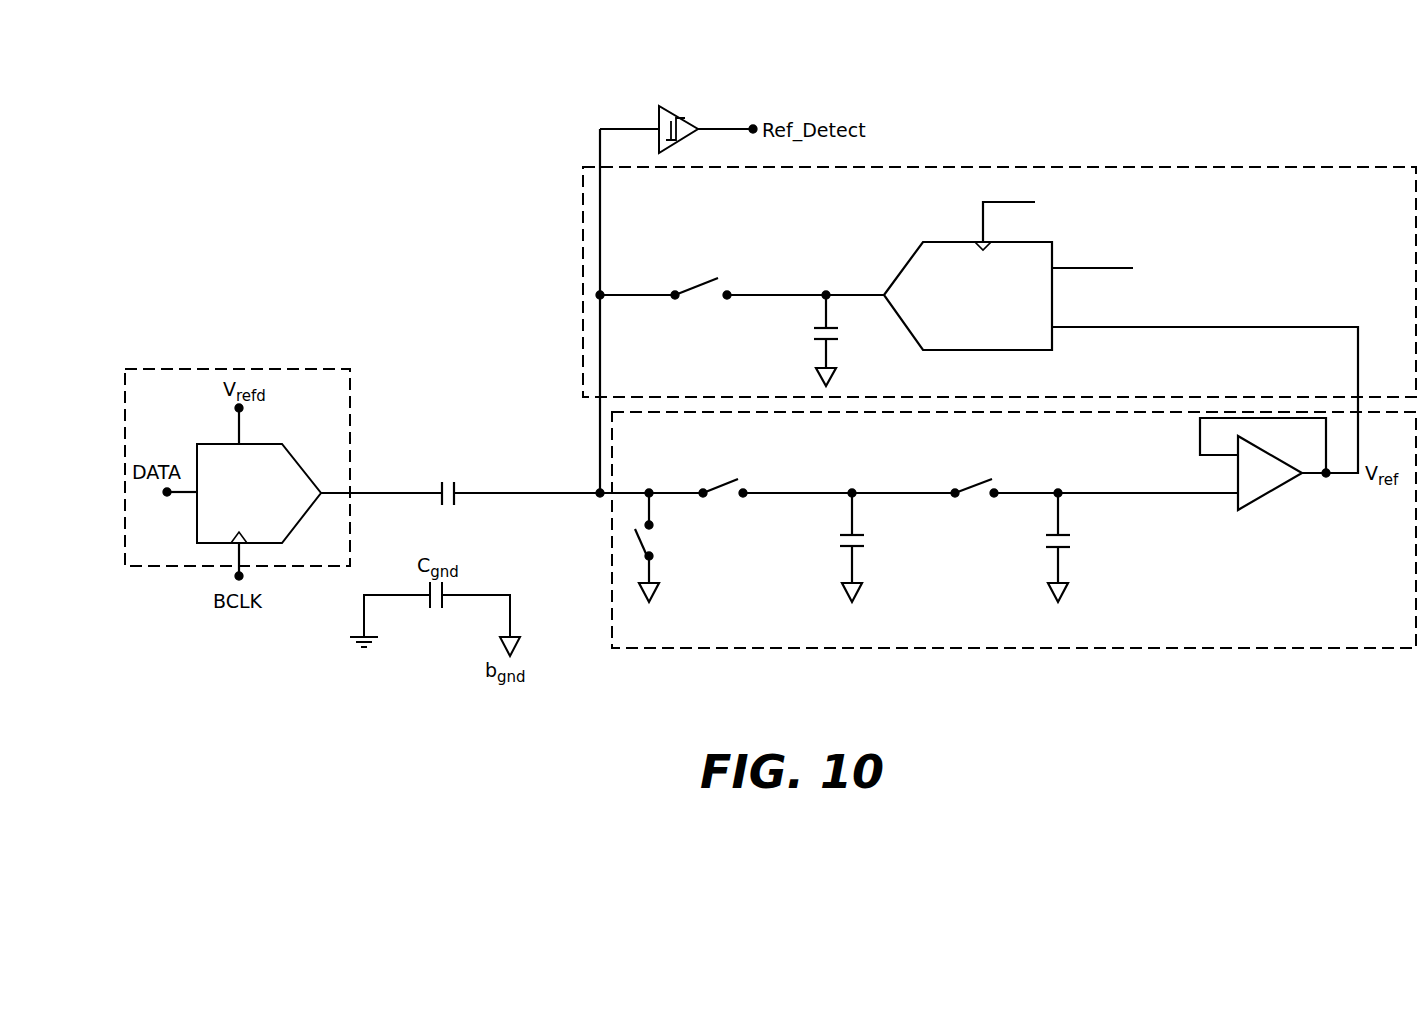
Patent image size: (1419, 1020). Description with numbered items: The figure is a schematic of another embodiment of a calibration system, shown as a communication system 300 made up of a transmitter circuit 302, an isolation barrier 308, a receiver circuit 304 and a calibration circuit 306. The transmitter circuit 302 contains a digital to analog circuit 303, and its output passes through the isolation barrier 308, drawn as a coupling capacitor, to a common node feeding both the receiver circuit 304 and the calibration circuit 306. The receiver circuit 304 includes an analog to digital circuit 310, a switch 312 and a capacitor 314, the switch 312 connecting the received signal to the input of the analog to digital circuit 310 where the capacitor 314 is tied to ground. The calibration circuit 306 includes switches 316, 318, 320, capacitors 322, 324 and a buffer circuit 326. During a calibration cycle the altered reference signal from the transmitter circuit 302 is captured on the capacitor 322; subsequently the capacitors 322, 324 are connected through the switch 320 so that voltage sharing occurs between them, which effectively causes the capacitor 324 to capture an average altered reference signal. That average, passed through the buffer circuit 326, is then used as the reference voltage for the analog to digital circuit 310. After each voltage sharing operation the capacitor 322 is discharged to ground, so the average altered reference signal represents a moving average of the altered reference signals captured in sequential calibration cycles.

The communication system 300 is at (424, 123).
The transmitter circuit 302 is at (193, 369).
The digital to analog circuit 303 is at (197, 517).
The receiver circuit 304 is at (1112, 167).
The calibration circuit 306 is at (1183, 648).
The isolation barrier 308 is at (440, 481).
The analog to digital circuit 310 is at (902, 268).
The switch 312 is at (713, 283).
The capacitor 314 is at (806, 326).
The switch 316 is at (635, 545).
The switch 318 is at (722, 482).
The switch 320 is at (975, 482).
The capacitor 322 is at (840, 538).
The capacitor 324 is at (1046, 541).
The buffer circuit 326 is at (1285, 485).